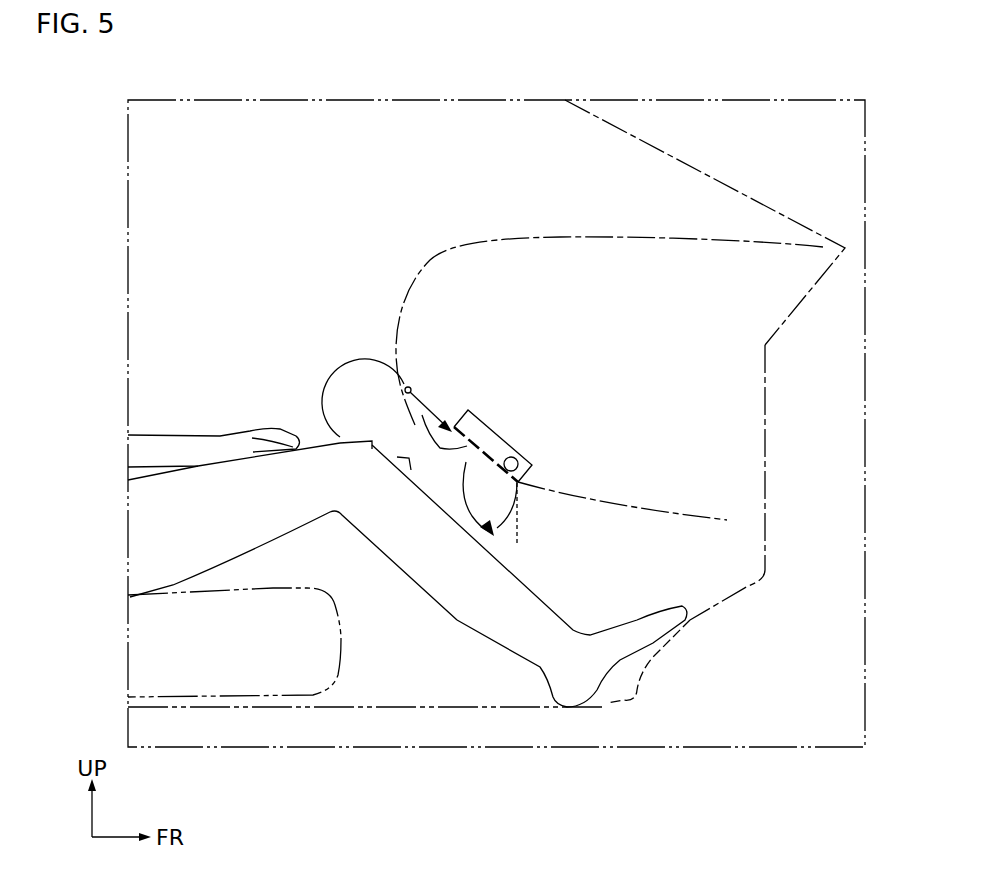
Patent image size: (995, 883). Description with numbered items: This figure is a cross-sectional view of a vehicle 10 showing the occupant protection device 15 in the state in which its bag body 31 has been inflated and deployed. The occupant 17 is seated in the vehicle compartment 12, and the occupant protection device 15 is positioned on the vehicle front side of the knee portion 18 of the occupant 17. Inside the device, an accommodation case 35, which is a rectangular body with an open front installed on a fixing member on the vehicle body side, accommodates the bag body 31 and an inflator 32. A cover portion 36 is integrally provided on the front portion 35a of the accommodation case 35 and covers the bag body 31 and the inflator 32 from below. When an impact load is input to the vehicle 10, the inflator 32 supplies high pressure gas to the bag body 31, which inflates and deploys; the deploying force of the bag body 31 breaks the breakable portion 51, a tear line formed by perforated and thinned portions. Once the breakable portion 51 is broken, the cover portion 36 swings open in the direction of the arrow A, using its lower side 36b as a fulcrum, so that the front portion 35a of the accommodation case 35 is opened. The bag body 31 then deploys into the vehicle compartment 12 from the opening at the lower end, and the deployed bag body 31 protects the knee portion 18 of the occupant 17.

The vehicle 10 is at (778, 144).
The vehicle compartment 12 is at (281, 141).
The occupant protection device 15 is at (495, 405).
The occupant 17 is at (147, 532).
The knee portion 18 is at (347, 452).
The bag body 31 is at (360, 360).
The inflator 32 is at (518, 461).
The accommodation case 35 is at (494, 438).
The front portion 35a is at (470, 452).
The cover portion 36 is at (520, 527).
The lower side 36b is at (520, 483).
The breakable portion 51 is at (425, 437).
The arrow A is at (460, 522).